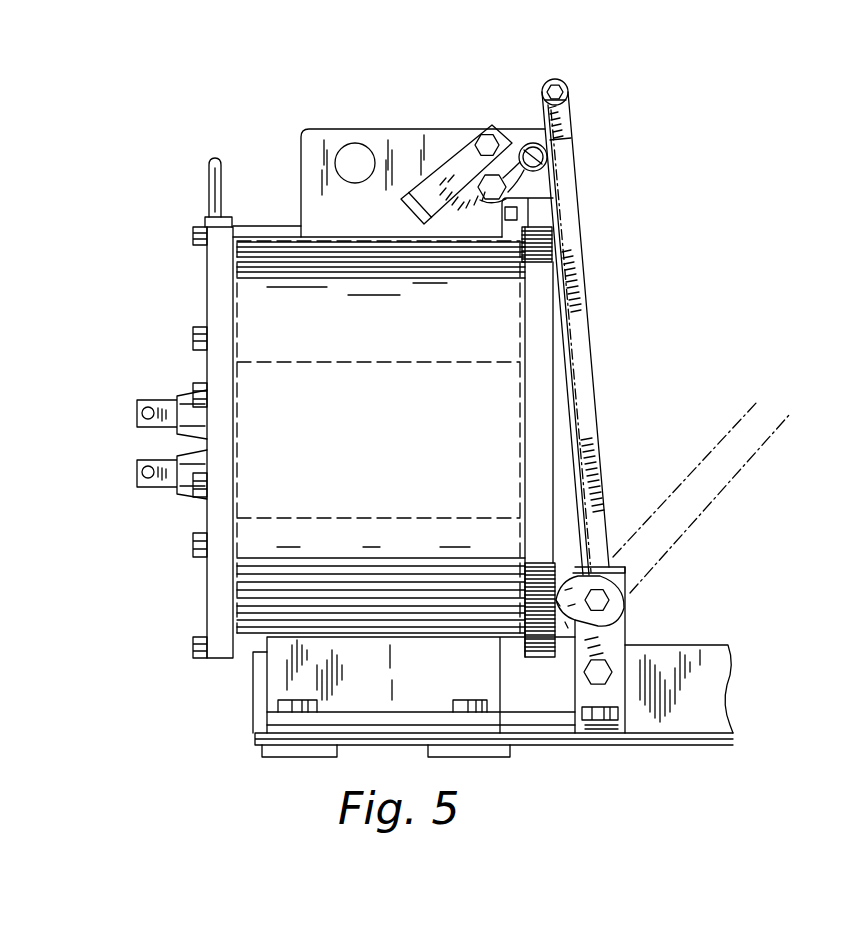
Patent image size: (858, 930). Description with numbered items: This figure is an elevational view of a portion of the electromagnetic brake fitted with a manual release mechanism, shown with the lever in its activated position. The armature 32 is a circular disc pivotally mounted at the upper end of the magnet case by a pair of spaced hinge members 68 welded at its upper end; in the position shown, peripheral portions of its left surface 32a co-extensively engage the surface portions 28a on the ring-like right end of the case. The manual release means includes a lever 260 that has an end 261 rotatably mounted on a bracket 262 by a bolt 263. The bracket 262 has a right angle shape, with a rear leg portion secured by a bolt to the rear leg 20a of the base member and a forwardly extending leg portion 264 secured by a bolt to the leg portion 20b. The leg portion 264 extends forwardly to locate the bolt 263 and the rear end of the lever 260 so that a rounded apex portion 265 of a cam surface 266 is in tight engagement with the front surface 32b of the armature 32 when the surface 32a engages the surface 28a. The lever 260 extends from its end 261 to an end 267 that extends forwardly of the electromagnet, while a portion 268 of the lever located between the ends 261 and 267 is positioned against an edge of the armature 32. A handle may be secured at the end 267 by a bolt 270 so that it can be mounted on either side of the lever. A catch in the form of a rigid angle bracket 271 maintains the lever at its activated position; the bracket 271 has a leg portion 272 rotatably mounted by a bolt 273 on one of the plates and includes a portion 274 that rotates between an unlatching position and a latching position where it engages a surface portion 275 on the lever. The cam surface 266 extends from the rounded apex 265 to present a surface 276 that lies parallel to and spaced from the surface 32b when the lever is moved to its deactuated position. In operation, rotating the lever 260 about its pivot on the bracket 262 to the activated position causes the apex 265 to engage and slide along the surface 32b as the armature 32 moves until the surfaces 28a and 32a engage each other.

The rear leg 20a is at (700, 737).
The forwardly extending leg portion 20b is at (693, 662).
The surface portion 28a is at (523, 378).
The armature 32 is at (540, 405).
The left surface 32a is at (523, 320).
The right face 32b is at (553, 457).
The hinge member 68 is at (538, 208).
The lever 260 is at (583, 363).
The end 261 is at (603, 575).
The bracket 262 is at (613, 635).
The bolt 263 is at (628, 602).
The forwardly extending leg portion 264 is at (587, 698).
The rounded apex portion 265 is at (560, 608).
The cam surface 266 is at (565, 625).
The end 267 is at (562, 118).
The portion 268 is at (550, 230).
The bolt 270 is at (556, 79).
The rigid angle bracket 271 is at (443, 160).
The leg portion 272 is at (413, 187).
The bolt 273 is at (484, 143).
The portion 274 is at (410, 202).
The surface portion 275 is at (565, 148).
The surface 276 is at (584, 622).